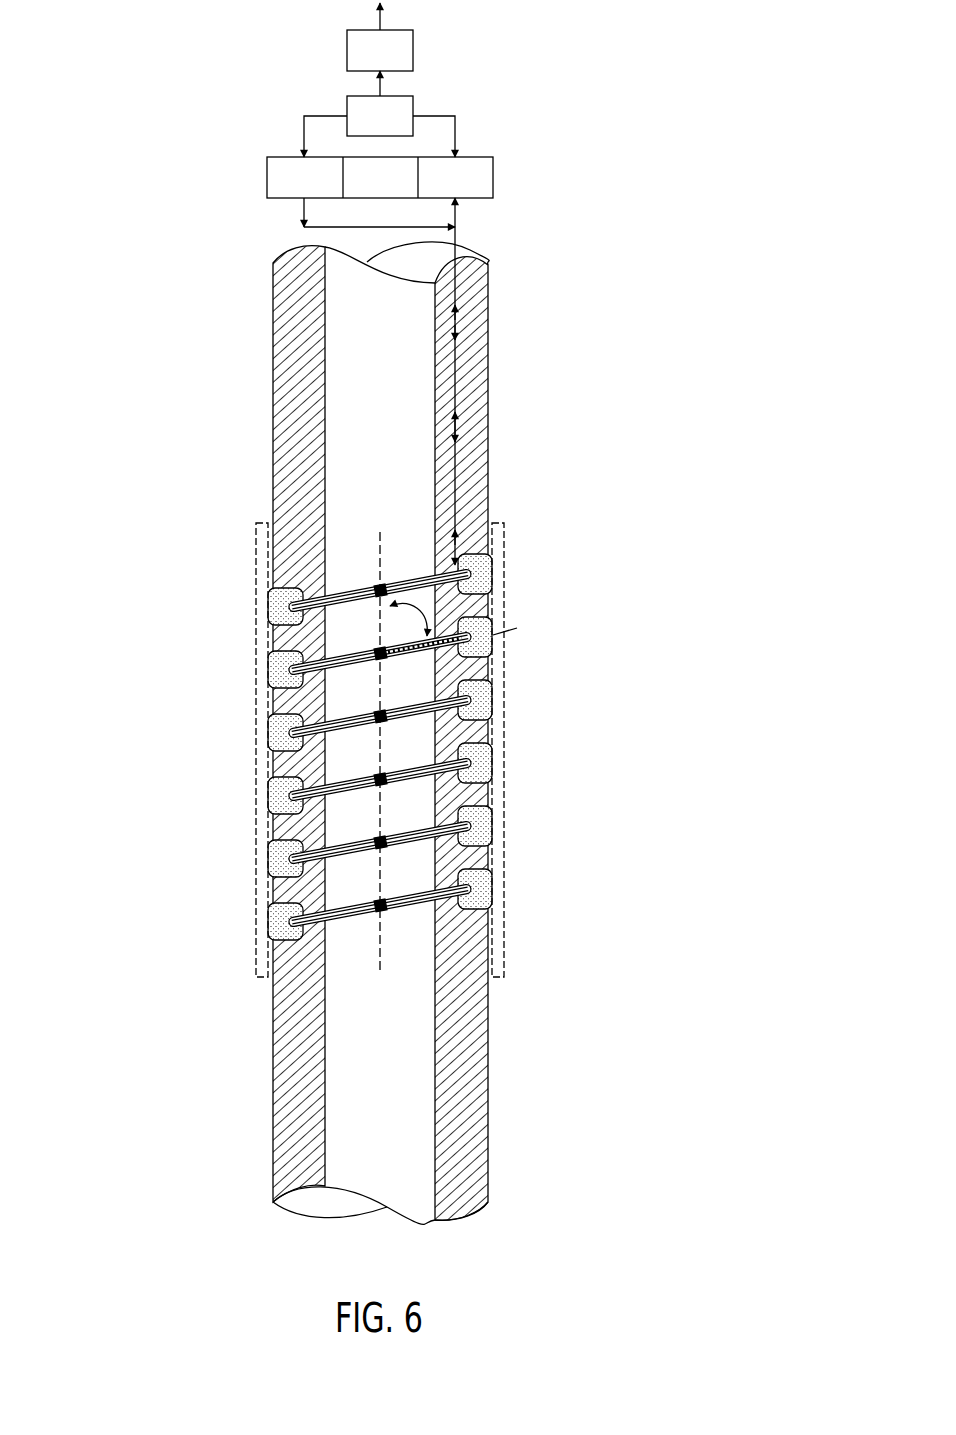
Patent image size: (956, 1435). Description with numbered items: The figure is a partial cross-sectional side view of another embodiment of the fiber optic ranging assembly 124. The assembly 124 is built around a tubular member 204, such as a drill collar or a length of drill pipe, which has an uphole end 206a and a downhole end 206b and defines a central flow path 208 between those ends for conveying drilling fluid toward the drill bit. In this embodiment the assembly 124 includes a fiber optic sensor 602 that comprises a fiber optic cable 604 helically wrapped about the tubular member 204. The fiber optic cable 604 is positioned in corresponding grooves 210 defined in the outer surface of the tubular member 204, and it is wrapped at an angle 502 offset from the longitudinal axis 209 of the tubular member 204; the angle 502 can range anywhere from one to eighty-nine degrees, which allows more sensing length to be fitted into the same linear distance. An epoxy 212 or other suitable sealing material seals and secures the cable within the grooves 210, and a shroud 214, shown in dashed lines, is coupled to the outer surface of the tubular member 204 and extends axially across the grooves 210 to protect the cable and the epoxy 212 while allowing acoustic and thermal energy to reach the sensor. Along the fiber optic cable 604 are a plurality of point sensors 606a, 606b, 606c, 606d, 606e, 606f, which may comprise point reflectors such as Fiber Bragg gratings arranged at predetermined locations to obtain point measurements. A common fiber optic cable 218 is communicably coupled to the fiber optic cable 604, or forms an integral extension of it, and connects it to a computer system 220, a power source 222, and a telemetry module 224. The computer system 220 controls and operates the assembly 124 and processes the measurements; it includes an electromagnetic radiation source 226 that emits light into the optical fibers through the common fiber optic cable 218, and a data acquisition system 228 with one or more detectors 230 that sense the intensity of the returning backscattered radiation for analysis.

The fiber optic ranging assembly 124 is at (202, 302).
The tubular member 204 is at (273, 393).
The uphole end 206a is at (532, 300).
The downhole end 206b is at (528, 1185).
The central flow path 208 is at (325, 347).
The longitudinal axis 209 is at (380, 957).
The grooves 210 is at (270, 657).
The epoxy 212 is at (278, 600).
The shroud 214 is at (256, 542).
The common fiber optic cable 218 is at (457, 358).
The computer system 220 is at (422, 176).
The power source 222 is at (398, 130).
The telemetry module 224 is at (398, 62).
The electromagnetic radiation source 226 is at (323, 188).
The data acquisition system 228 is at (473, 188).
The detector 230 is at (398, 188).
The angle 502 is at (392, 606).
The fiber optic sensor 602 is at (518, 540).
The fiber optic cable 604 is at (470, 697).
The point sensor 606a is at (380, 590).
The point sensor 606b is at (380, 654).
The point sensor 606c is at (380, 718).
The point sensor 606d is at (380, 781).
The point sensor 606e is at (380, 843).
The point sensor 606f is at (380, 906).